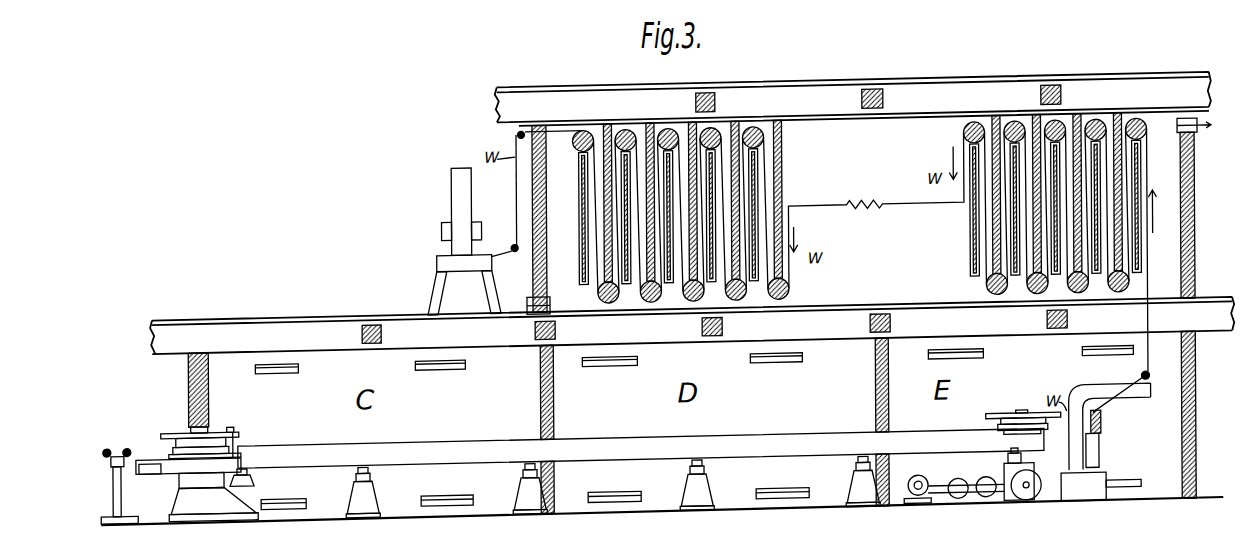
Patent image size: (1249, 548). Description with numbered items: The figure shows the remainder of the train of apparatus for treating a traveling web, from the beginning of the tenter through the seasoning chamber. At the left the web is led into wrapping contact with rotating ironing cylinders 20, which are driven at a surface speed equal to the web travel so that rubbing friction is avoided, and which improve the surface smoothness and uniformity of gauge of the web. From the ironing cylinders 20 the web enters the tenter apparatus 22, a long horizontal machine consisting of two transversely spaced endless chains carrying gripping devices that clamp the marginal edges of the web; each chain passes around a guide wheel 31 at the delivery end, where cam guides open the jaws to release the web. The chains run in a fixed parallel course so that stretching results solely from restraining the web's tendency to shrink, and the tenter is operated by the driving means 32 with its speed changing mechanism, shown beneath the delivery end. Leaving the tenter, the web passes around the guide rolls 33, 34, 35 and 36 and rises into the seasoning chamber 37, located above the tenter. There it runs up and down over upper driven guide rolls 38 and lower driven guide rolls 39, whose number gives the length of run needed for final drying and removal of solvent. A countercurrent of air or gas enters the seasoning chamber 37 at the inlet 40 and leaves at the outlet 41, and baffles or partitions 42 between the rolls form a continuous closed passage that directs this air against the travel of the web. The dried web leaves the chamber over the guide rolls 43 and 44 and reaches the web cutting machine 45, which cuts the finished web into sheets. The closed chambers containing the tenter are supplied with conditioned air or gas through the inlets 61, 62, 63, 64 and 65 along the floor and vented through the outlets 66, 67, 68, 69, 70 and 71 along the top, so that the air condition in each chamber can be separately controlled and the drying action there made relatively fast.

The ironing cylinders 20 is at (170, 435).
The tenter apparatus 22 is at (390, 442).
The guide wheel 31 is at (992, 426).
The driving means for the tenter 32 is at (983, 504).
The guide roll 33 is at (1101, 446).
The guide roll 34 is at (1103, 426).
The guide roll 35 is at (1093, 419).
The guide roll 36 is at (1149, 383).
The seasoning chamber 37 is at (922, 256).
The upper driven guide rolls 38 is at (1140, 130).
The lower driven guide rolls 39 is at (1094, 316).
The inlet 40 is at (507, 298).
The outlet 41 is at (1198, 145).
The baffles or partitions 42 is at (996, 303).
The guide roll 43 is at (518, 130).
The guide roll 44 is at (514, 242).
The web cutting machine 45 is at (457, 184).
The inlet 61 is at (288, 500).
The inlet 62 is at (455, 500).
The inlet 63 is at (605, 500).
The inlet 64 is at (790, 500).
The inlet 65 is at (1127, 509).
The outlet 66 is at (1090, 365).
The outlet 67 is at (960, 364).
The outlet 68 is at (765, 364).
The outlet 69 is at (590, 364).
The outlet 70 is at (432, 364).
The outlet 71 is at (263, 364).